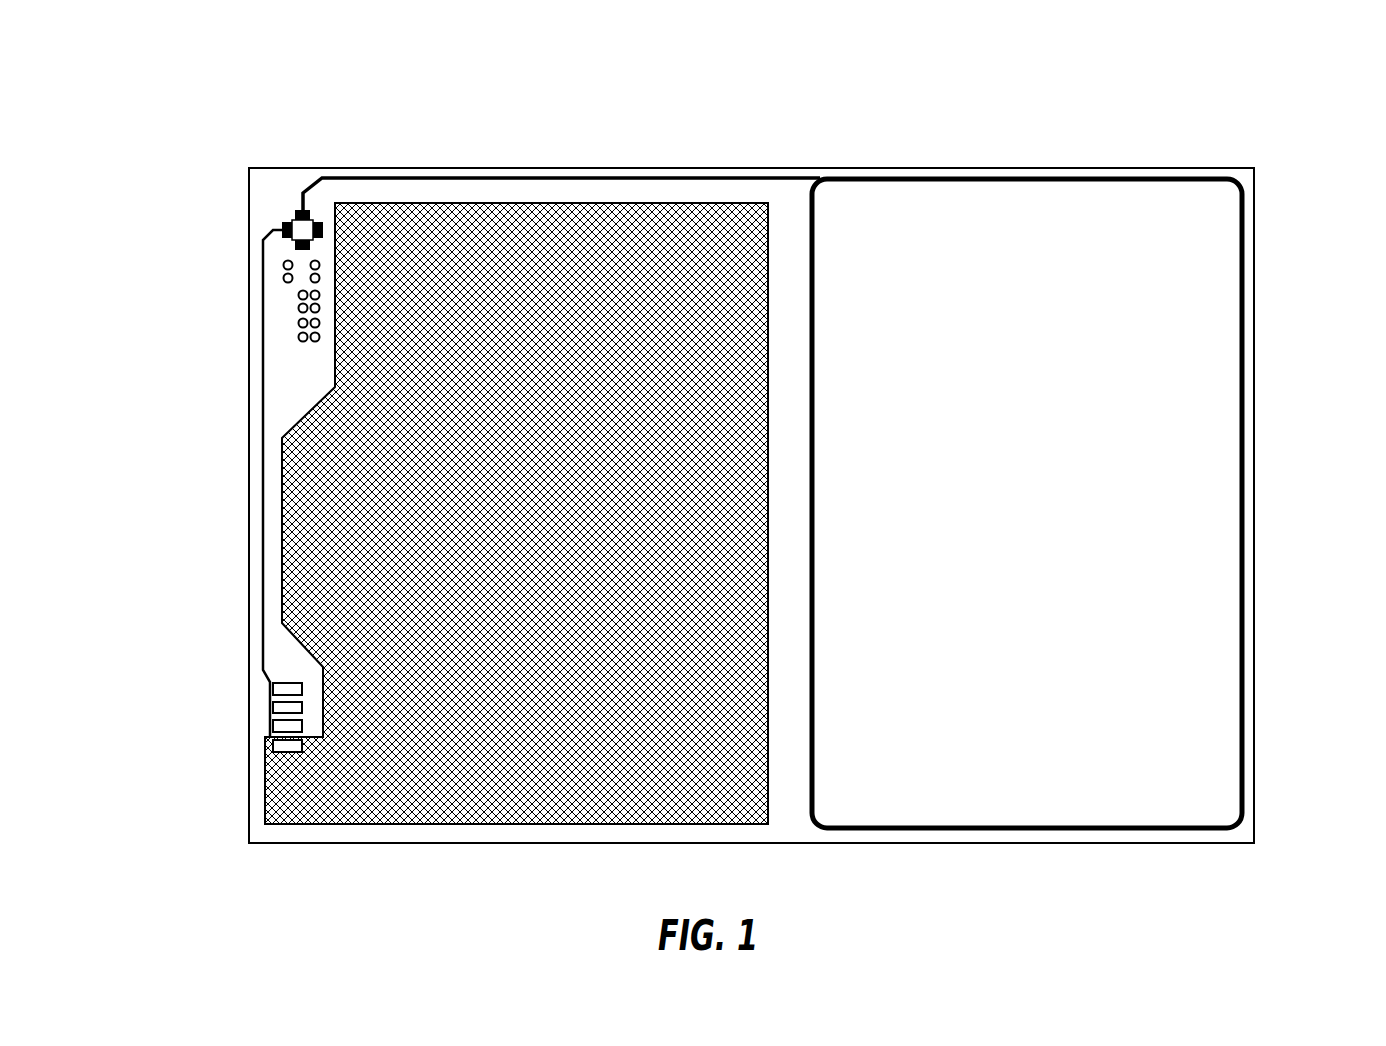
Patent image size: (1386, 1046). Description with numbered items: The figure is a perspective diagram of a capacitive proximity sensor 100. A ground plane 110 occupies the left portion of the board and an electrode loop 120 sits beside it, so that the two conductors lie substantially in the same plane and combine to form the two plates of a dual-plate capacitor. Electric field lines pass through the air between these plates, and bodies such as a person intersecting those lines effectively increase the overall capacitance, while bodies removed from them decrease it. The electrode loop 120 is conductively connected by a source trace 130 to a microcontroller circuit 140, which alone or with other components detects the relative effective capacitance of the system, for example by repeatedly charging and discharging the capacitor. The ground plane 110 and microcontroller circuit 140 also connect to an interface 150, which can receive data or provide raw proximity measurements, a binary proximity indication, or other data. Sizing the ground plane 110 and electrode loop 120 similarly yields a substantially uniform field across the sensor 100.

The capacitive proximity sensor 100 is at (1312, 90).
The ground plane 110 is at (633, 302).
The electrode loop 120 is at (878, 178).
The source trace 130 is at (745, 178).
The microcontroller circuit 140 is at (303, 230).
The interface 150 is at (237, 760).